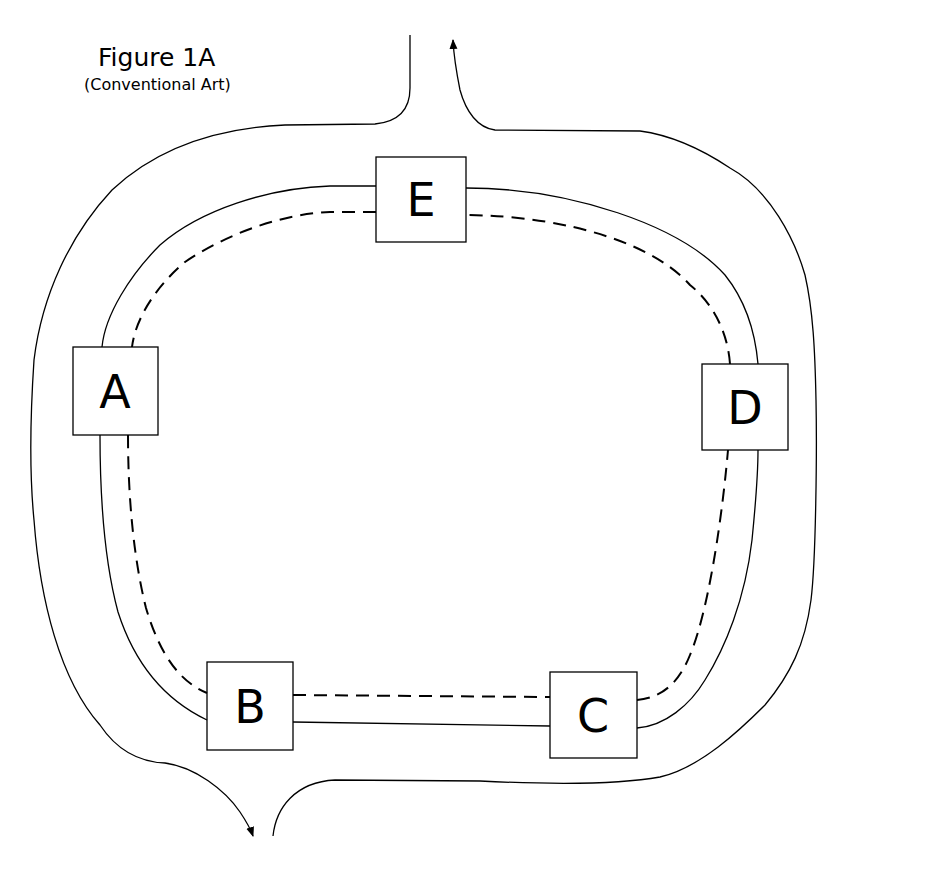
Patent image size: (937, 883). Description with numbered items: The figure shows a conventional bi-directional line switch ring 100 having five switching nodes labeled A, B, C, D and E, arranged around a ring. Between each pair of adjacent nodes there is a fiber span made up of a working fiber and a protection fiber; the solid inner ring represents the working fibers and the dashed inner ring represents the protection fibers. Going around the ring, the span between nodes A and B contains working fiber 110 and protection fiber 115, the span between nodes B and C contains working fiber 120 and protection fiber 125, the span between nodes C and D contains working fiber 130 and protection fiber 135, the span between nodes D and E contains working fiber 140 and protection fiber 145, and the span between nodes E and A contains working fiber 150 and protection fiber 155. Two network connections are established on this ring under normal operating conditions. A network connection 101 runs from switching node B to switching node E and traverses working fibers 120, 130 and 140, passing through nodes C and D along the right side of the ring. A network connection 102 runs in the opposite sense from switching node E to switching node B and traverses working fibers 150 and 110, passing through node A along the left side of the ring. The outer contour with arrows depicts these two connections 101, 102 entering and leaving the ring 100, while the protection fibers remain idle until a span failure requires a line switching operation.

The bi-directional line switch ring 100 is at (741, 124).
The network connection 101 is at (808, 239).
The network connection 102 is at (73, 230).
The working fiber 110 is at (90, 558).
The protection fiber 115 is at (150, 540).
The working fiber 120 is at (458, 742).
The protection fiber 125 is at (470, 684).
The working fiber 130 is at (756, 583).
The protection fiber 135 is at (697, 590).
The working fiber 140 is at (663, 218).
The protection fiber 145 is at (650, 281).
The working fiber 150 is at (215, 205).
The protection fiber 155 is at (218, 270).